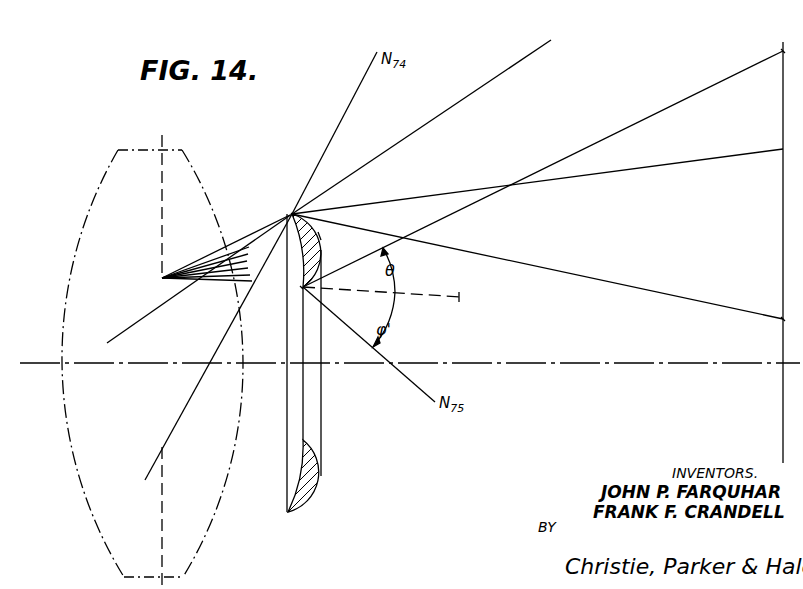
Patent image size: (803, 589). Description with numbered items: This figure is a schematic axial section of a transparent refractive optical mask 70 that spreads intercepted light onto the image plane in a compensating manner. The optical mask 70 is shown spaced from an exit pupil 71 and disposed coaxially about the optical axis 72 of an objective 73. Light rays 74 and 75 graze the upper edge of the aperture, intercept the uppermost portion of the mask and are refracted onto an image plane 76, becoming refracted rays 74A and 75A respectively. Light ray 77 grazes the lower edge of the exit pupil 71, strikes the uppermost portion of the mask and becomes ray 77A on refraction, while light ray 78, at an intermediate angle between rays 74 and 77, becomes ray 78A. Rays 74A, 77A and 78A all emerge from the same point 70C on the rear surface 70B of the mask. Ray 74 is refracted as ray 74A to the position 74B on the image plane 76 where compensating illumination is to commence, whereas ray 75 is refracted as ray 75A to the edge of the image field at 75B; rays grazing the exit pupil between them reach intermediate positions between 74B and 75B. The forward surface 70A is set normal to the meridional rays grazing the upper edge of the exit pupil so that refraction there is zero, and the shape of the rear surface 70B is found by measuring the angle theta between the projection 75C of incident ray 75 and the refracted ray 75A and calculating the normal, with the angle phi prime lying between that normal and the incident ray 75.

The transparent refractive optical mask 70 is at (298, 249).
The forward surface 70A is at (299, 290).
The rear surface 70B is at (318, 230).
The point on rear surface 70C is at (296, 212).
The exit pupil 71 is at (158, 283).
The optical axis 72 is at (574, 366).
The objective 73 is at (88, 218).
The light ray 74 is at (227, 242).
The refracted light ray 74A is at (668, 295).
The position on image plane 74B is at (781, 321).
The light ray 75 is at (228, 290).
The refracted light ray 75A is at (641, 118).
The edge of image field 75B is at (782, 50).
The projection of incident ray 75C is at (462, 302).
The image plane 76 is at (780, 230).
The light ray 77 is at (193, 402).
The refracted light ray 77A is at (487, 88).
The light ray 78 is at (122, 333).
The refracted light ray 78A is at (648, 172).